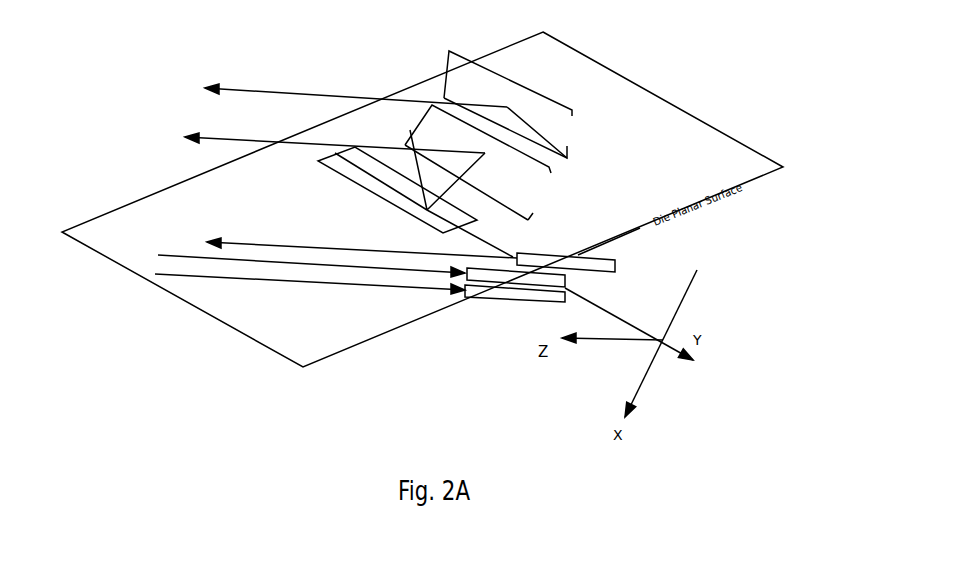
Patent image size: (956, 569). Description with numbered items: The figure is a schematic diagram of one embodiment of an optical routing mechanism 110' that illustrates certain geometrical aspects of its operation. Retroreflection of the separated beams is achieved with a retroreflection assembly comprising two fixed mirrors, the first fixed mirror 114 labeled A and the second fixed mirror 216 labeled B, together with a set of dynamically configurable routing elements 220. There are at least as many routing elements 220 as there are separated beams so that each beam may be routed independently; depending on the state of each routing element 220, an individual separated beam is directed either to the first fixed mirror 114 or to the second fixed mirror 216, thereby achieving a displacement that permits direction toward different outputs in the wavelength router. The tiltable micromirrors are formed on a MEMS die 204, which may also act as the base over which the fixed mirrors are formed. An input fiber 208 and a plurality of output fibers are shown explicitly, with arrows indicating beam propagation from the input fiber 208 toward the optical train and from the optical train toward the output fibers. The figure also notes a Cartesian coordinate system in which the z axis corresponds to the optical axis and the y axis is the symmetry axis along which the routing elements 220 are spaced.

The optical routing mechanism 110' is at (714, 47).
The MEMS die 204 is at (730, 160).
The second fixed mirror 216 is at (531, 90).
The fixed mirror A 114 is at (556, 171).
The dynamically configurable routing element 220 is at (340, 176).
The input fiber 208 is at (617, 259).